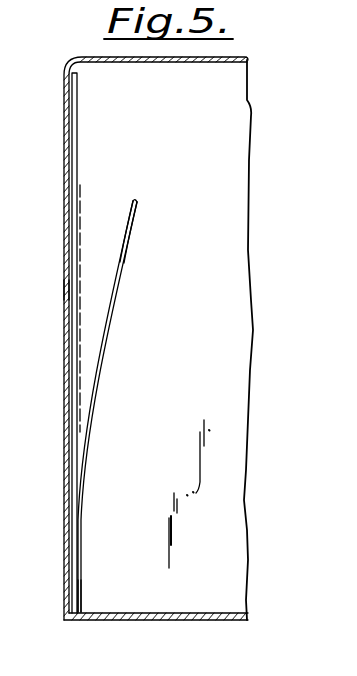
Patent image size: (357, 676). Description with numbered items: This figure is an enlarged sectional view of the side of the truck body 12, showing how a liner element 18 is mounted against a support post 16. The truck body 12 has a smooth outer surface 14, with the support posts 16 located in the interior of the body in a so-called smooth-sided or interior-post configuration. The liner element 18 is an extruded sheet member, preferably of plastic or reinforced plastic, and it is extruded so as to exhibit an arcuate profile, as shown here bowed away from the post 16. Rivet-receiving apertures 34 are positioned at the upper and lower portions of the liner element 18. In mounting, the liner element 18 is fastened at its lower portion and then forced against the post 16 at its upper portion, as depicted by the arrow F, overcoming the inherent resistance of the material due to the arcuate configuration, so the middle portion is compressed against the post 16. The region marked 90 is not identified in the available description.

The truck body 12 is at (82, 57).
The smooth outer surface 14 is at (63, 289).
The support posts 16 is at (78, 117).
The liner element 18 is at (106, 314).
The rivet-receiving apertures 34 is at (130, 212).
The fold/tear region 90 is at (241, 382).
The arrow F is at (138, 222).